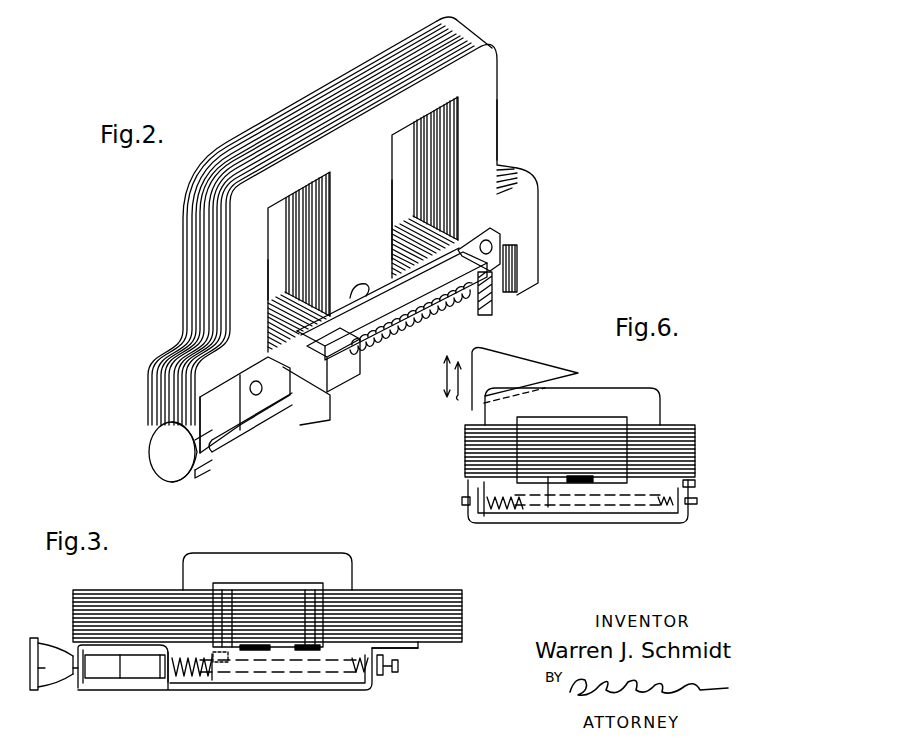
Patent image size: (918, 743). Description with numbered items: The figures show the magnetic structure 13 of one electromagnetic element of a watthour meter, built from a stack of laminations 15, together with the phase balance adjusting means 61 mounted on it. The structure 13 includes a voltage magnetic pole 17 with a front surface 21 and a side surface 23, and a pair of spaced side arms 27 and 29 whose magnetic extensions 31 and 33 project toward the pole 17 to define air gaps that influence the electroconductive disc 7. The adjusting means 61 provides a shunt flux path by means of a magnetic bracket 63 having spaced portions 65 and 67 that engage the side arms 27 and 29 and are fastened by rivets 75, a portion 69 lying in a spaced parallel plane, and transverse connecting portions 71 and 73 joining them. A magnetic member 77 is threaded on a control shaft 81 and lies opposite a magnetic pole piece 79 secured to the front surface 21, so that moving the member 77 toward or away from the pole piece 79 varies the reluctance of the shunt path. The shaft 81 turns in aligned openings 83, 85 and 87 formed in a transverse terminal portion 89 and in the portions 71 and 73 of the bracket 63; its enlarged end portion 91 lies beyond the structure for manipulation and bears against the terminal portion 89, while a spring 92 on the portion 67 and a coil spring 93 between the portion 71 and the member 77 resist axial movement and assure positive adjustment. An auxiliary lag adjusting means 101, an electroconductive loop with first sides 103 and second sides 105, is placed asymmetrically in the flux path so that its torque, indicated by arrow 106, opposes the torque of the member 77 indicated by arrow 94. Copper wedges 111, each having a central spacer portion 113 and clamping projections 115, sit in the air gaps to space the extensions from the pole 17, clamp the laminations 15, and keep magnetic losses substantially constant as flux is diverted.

In FIG. 6, the electroconductive disc 7 is at (524, 363).
In FIG. 2, the magnetic structure 13 is at (343, 221).
In FIG. 6, the magnetic structure 13 is at (596, 444).
In FIG. 3, the magnetic structure 13 is at (282, 605).
In FIG. 2, the laminations 15 is at (276, 120).
In FIG. 6, the laminations 15 is at (695, 429).
In FIG. 3, the laminations 15 is at (435, 598).
In FIG. 2, the voltage magnetic pole 17 is at (392, 182).
In FIG. 2, the front surface 21 is at (385, 202).
In FIG. 2, the side surface 23 is at (297, 238).
In FIG. 2, the side arm 27 is at (258, 279).
In FIG. 2, the side arm 29 is at (492, 147).
In FIG. 2, the magnetic extension 31 is at (280, 309).
In FIG. 2, the magnetic extension 33 is at (402, 241).
In FIG. 2, the phase balance adjusting means 61 is at (146, 441).
In FIG. 3, the phase balance adjusting means 61 is at (36, 636).
In FIG. 2, the magnetic bracket 63 is at (272, 397).
In FIG. 6, the magnetic bracket 63 is at (582, 513).
In FIG. 3, the magnetic bracket 63 is at (264, 683).
In FIG. 2, the spaced portion of bracket 65 is at (241, 380).
In FIG. 6, the spaced portion of bracket 65 is at (466, 488).
In FIG. 3, the spaced portion of bracket 65 is at (119, 674).
In FIG. 2, the spaced portion of bracket 67 is at (490, 270).
In FIG. 6, the spaced portion of bracket 67 is at (697, 486).
In FIG. 3, the spaced portion of bracket 67 is at (410, 649).
In FIG. 2, the bracket portion 69 is at (484, 312).
In FIG. 6, the bracket portion 69 is at (630, 524).
In FIG. 3, the bracket portion 69 is at (338, 690).
In FIG. 2, the transverse connecting portion 71 is at (300, 393).
In FIG. 6, the transverse connecting portion 71 is at (470, 518).
In FIG. 3, the transverse connecting portion 71 is at (160, 686).
In FIG. 2, the transverse connecting portion 73 is at (484, 238).
In FIG. 6, the transverse connecting portion 73 is at (695, 511).
In FIG. 3, the transverse connecting portion 73 is at (376, 683).
In FIG. 2, the rivets 75 is at (495, 247).
In FIG. 2, the magnetic member 77 is at (350, 378).
In FIG. 6, the magnetic member 77 is at (535, 520).
In FIG. 3, the magnetic member 77 is at (218, 682).
In FIG. 2, the magnetic pole piece 79 is at (355, 291).
In FIG. 6, the magnetic pole piece 79 is at (583, 484).
In FIG. 3, the magnetic pole piece 79 is at (282, 680).
In FIG. 2, the control shaft 81 is at (259, 402).
In FIG. 6, the control shaft 81 is at (668, 515).
In FIG. 3, the control shaft 81 is at (102, 674).
In FIG. 3, the opening 83 is at (74, 648).
In FIG. 3, the opening 85 is at (163, 680).
In FIG. 3, the opening 87 is at (372, 686).
In FIG. 2, the transverse terminal portion 89 is at (223, 452).
In FIG. 3, the transverse terminal portion 89 is at (75, 685).
In FIG. 2, the enlarged end portion 91 is at (201, 473).
In FIG. 3, the enlarged end portion 91 is at (47, 685).
In FIG. 3, the spring 92 is at (399, 667).
In FIG. 6, the coil spring 93 is at (492, 520).
In FIG. 3, the coil spring 93 is at (190, 683).
In FIG. 6, the arrow 94 is at (447, 381).
In FIG. 2, the auxiliary lag adjusting means 101 is at (391, 304).
In FIG. 6, the auxiliary lag adjusting means 101 is at (567, 457).
In FIG. 3, the auxiliary lag adjusting means 101 is at (275, 622).
In FIG. 2, the first sides 103 is at (452, 281).
In FIG. 6, the first sides 103 is at (485, 419).
In FIG. 3, the first sides 103 is at (190, 589).
In FIG. 2, the second sides 105 is at (431, 298).
In FIG. 6, the second sides 105 is at (601, 387).
In FIG. 3, the second sides 105 is at (290, 552).
In FIG. 6, the arrow 106 is at (459, 370).
In FIG. 3, the wedges 111 is at (278, 585).
In FIG. 3, the central spacer portion 113 is at (207, 600).
In FIG. 3, the clamping projections 115 is at (234, 600).